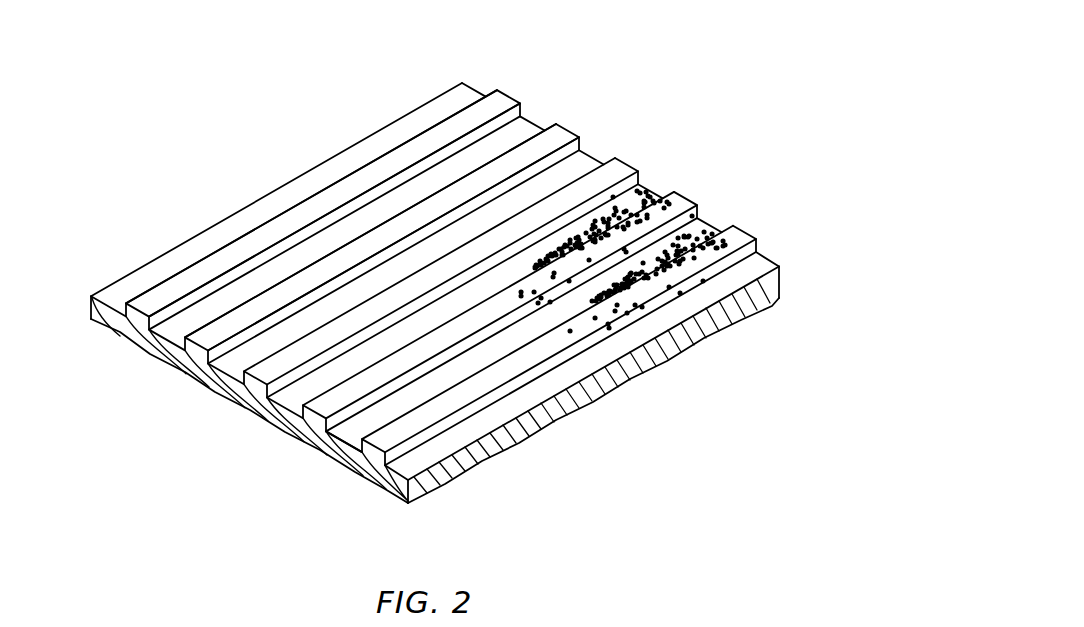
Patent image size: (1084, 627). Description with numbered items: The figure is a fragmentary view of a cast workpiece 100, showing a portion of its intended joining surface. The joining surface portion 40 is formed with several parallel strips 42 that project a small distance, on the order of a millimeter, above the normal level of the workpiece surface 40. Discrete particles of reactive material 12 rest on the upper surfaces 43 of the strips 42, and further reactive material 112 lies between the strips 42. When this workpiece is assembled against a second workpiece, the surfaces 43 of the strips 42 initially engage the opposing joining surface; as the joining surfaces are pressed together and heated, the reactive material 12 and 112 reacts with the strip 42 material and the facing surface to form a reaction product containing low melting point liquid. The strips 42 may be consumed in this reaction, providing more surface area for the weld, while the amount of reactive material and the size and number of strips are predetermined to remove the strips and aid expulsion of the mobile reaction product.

The molded article / slab with grooved surface 100 is at (438, 304).
The reactive material 12 is at (725, 245).
The reactive material between the strips 112 is at (613, 197).
The joining surface portion 40 is at (358, 432).
The parallel strips 42 is at (373, 448).
The upper surfaces of strips 43 is at (268, 375).